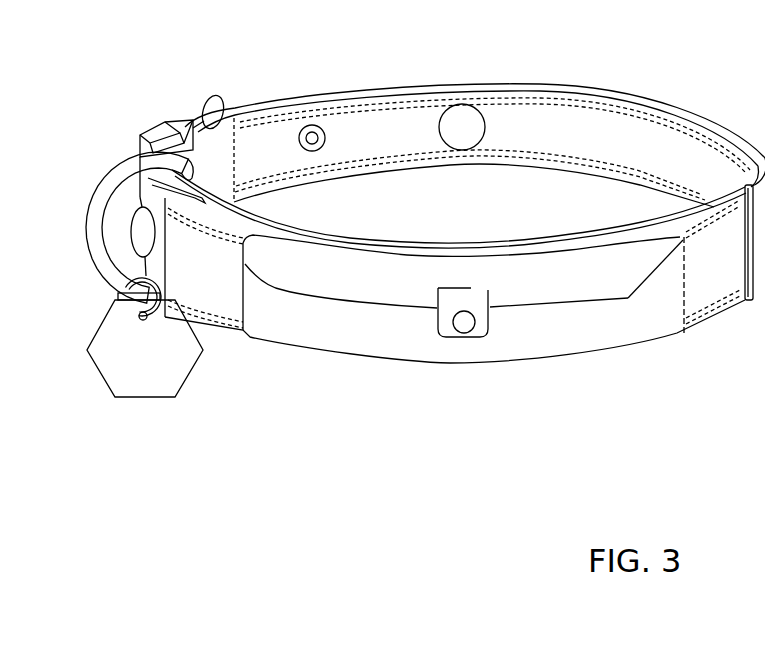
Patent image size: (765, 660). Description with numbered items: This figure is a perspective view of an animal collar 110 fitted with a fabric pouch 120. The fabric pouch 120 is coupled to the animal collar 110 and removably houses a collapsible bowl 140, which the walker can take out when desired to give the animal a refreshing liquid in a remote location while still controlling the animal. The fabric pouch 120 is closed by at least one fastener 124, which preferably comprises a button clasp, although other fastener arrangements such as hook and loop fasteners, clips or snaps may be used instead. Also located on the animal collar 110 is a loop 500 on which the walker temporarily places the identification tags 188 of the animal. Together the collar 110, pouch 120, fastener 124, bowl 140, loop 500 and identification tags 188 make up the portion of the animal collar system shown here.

The animal collar 110 is at (524, 78).
The fabric pouch 120 is at (592, 340).
The fastener 124 is at (456, 344).
The collapsible bowl 140 is at (496, 358).
The loop 500 is at (100, 177).
The identification tags 188 is at (148, 410).